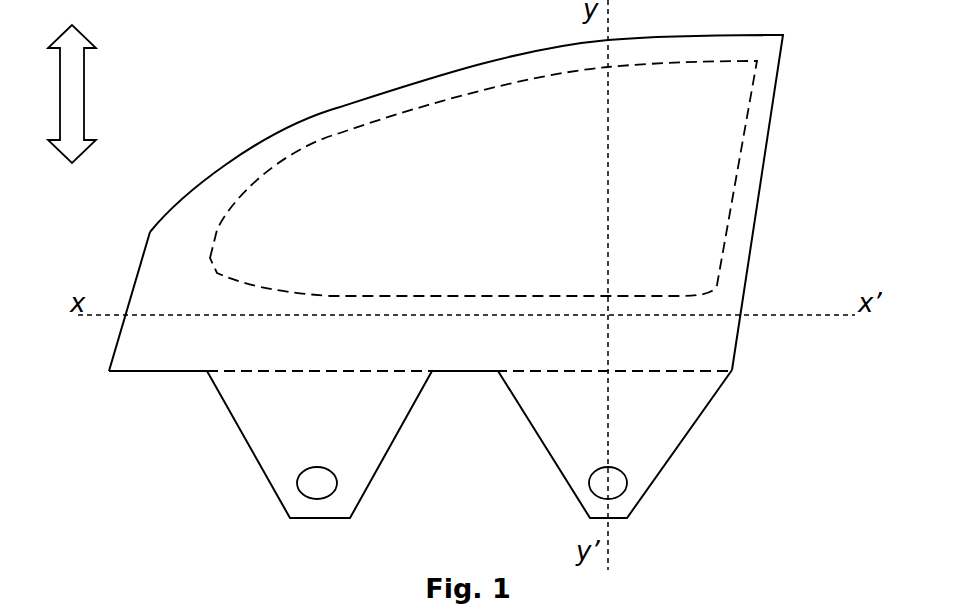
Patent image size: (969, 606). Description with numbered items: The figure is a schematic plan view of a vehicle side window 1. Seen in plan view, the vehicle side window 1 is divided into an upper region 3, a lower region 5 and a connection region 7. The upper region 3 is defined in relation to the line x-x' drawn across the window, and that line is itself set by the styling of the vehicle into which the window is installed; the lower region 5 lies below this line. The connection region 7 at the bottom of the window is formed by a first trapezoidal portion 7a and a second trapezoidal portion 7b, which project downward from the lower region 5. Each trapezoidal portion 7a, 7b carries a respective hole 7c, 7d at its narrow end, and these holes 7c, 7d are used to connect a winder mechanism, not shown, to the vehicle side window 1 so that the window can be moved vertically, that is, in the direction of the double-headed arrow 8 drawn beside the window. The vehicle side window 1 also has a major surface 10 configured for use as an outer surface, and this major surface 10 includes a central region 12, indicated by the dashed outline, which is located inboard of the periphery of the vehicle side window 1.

The vehicle side window 1 is at (262, 72).
The upper region 3 is at (805, 33).
The lower region 5 is at (780, 318).
The connection region 7 is at (103, 377).
The first trapezoidal portion 7a is at (268, 422).
The second trapezoidal portion 7b is at (643, 453).
The hole 7c is at (310, 483).
The hole 7d is at (600, 487).
The arrow 8 is at (75, 98).
The major surface 10 is at (183, 250).
The central region 12 is at (483, 186).